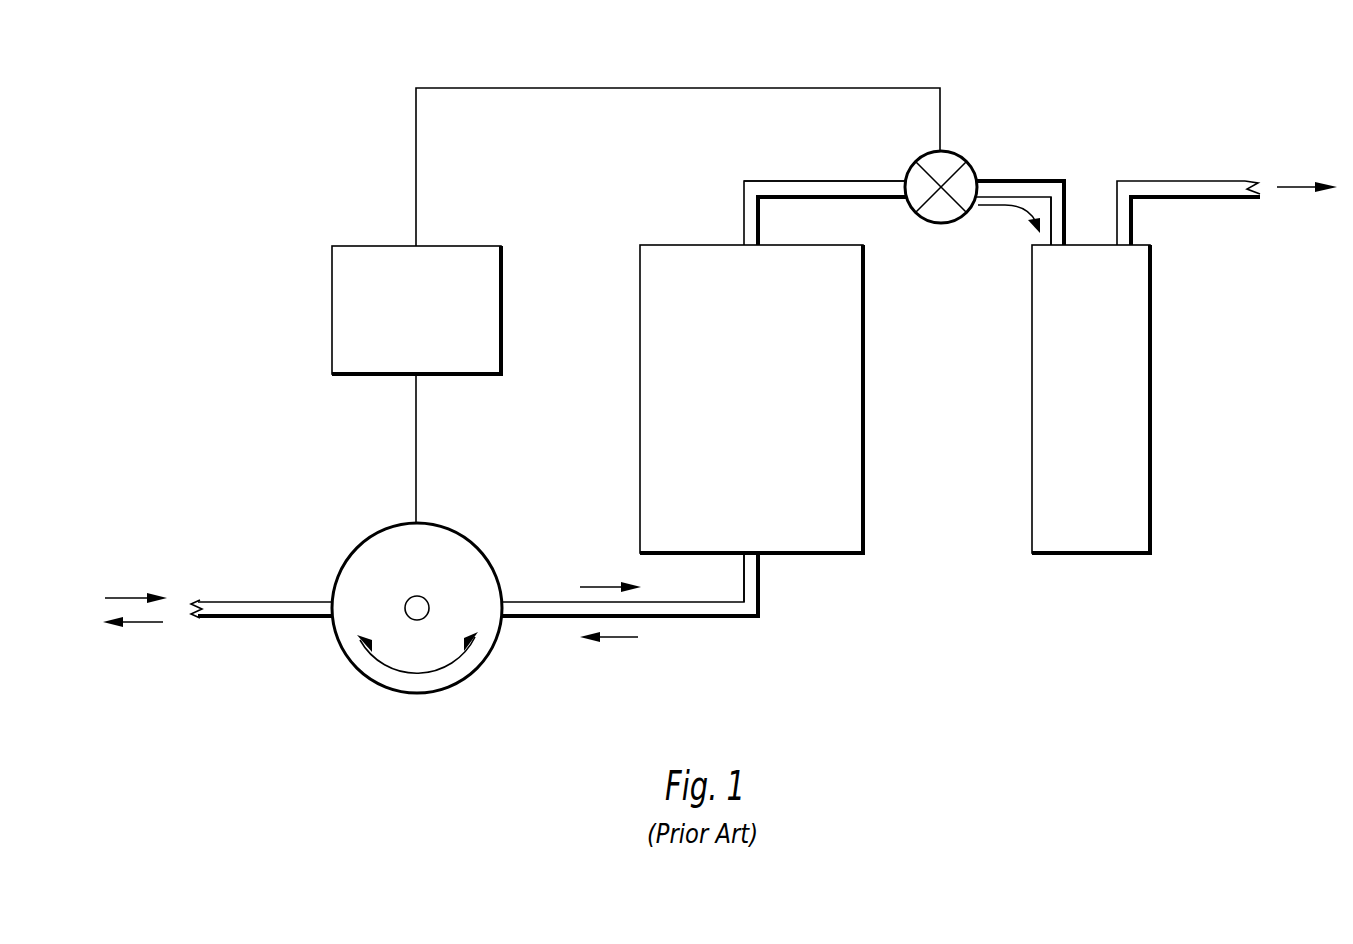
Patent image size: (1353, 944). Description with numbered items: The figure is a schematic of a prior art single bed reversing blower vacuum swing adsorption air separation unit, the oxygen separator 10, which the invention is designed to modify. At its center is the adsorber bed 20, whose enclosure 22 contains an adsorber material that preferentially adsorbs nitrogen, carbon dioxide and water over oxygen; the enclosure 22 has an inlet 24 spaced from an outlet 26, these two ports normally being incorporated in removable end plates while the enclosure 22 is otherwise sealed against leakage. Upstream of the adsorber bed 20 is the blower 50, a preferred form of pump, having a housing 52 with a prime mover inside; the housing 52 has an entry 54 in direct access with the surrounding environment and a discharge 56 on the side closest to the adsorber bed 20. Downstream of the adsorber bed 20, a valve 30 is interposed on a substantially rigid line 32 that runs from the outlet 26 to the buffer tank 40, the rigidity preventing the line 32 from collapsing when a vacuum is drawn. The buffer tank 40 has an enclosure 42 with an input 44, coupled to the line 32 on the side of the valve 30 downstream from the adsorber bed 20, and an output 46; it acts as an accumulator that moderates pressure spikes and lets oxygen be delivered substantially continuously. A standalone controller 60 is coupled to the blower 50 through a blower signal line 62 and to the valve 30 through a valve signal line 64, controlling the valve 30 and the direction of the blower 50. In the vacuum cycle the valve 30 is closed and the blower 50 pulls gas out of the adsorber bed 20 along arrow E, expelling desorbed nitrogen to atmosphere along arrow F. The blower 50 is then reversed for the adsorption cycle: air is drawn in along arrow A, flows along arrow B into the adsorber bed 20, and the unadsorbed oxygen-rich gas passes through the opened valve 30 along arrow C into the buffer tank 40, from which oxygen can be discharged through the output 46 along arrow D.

The oxygen separator 10 is at (936, 628).
The adsorber bed 20 is at (785, 399).
The enclosure 22 is at (865, 458).
The inlet 24 is at (753, 587).
The outlet 26 is at (744, 234).
The valve 30 is at (962, 155).
The line 32 is at (822, 187).
The buffer tank 40 is at (1123, 399).
The enclosure 42 is at (1151, 445).
The input 44 is at (1060, 208).
The output 46 is at (1125, 220).
The blower 50 is at (417, 610).
The housing 52 is at (417, 694).
The entry 54 is at (267, 607).
The discharge 56 is at (528, 607).
The controller 60 is at (420, 355).
The blower signal line 62 is at (416, 430).
The valve signal line 64 is at (548, 88).
The arrow A is at (118, 597).
The arrow B is at (606, 587).
The arrow C is at (990, 207).
The arrow D is at (1293, 188).
The arrow E is at (615, 637).
The arrow F is at (130, 624).